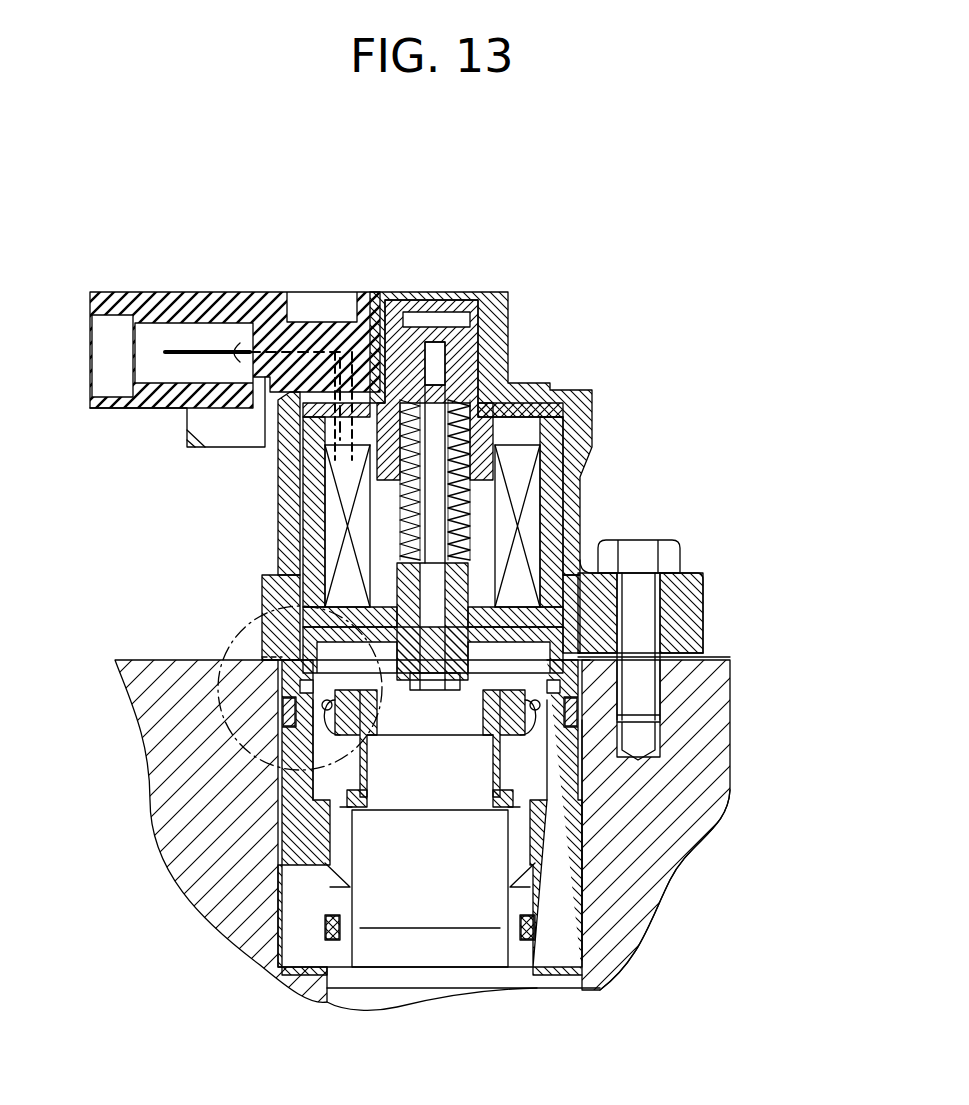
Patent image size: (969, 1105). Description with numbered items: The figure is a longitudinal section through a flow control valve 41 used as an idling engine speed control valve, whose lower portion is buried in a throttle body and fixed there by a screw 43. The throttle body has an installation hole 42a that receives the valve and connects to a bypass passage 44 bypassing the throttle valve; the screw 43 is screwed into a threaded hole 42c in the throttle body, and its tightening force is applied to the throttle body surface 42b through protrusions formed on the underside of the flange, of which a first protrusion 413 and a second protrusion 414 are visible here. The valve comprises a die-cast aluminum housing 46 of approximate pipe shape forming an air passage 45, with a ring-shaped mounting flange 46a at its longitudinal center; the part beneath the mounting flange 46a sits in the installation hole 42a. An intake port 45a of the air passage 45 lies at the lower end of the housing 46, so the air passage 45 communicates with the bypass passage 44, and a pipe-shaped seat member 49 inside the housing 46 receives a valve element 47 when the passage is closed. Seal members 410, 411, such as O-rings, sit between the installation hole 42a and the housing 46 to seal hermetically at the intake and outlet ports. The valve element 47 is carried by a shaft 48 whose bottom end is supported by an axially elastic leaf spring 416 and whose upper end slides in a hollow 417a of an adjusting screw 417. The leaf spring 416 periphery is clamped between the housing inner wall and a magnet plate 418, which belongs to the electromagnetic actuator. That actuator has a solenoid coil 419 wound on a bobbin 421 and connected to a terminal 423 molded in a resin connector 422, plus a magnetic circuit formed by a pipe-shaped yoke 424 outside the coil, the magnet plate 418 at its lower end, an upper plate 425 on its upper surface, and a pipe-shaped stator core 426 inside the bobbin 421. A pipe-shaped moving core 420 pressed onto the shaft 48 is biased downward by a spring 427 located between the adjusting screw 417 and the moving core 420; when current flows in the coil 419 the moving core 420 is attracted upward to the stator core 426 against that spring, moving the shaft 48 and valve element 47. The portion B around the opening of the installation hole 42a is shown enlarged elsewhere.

The flow control valve 41 is at (515, 277).
The installation hole 42a is at (705, 795).
The throttle body surface 42b is at (716, 649).
The threaded hole 42c is at (720, 745).
The screw 43 is at (672, 556).
The bypass passage 44 is at (360, 992).
The air passage 45 is at (462, 884).
The intake port 45a is at (468, 945).
The housing 46 is at (293, 833).
The mounting flange 46a is at (682, 618).
The valve element 47 is at (350, 770).
The shaft 48 is at (440, 525).
The seat member 49 is at (650, 918).
The seal member 410 is at (333, 725).
The seal member 411 is at (300, 968).
The first protrusion 413 is at (688, 652).
The second protrusion 414 is at (283, 712).
The leaf spring 416 is at (268, 592).
The adjusting screw 417 is at (465, 334).
The hollow 417a is at (432, 370).
The magnet plate 418 is at (600, 612).
The solenoid coil 419 is at (520, 520).
The moving core 420 is at (466, 577).
The bobbin 421 is at (560, 442).
The connector 422 is at (155, 305).
The terminal 423 is at (203, 352).
The yoke 424 is at (335, 530).
The upper plate 425 is at (560, 407).
The stator core 426 is at (560, 483).
The spring 427 is at (340, 445).
The portion B is at (215, 652).